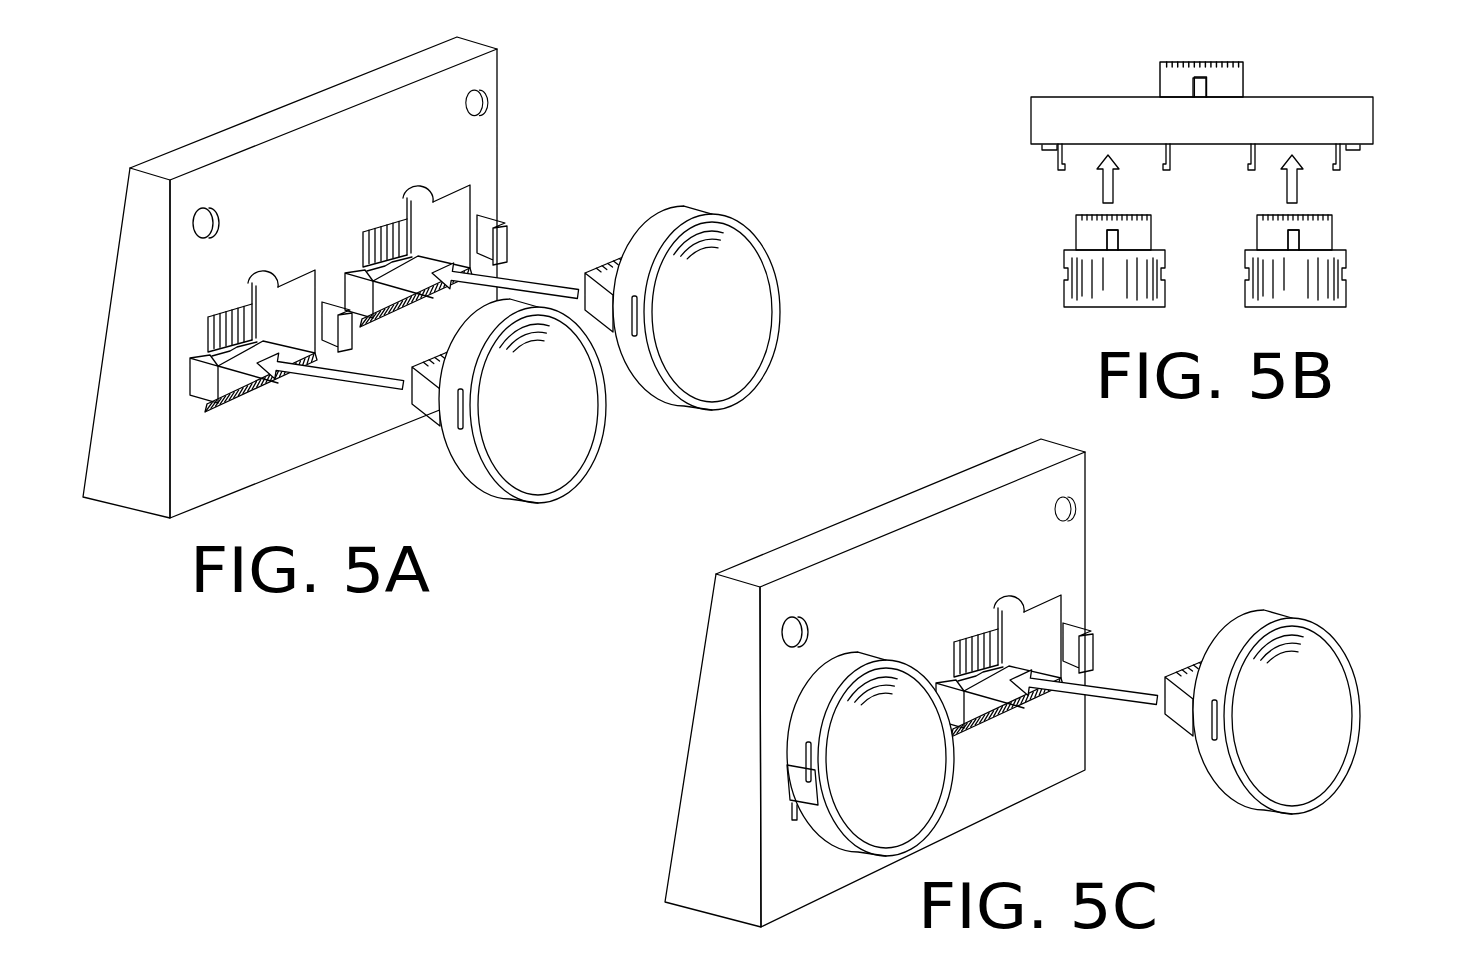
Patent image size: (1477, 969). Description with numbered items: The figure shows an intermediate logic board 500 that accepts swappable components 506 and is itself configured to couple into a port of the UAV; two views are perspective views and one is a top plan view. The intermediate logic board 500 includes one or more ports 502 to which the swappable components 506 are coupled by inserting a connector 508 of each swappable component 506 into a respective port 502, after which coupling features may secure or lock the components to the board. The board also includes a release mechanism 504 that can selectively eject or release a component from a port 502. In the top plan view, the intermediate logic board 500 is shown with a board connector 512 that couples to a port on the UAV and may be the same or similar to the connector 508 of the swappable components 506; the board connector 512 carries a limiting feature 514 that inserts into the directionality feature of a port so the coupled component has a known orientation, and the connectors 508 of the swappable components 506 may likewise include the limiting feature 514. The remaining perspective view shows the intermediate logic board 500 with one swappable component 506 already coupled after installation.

In FIG. 5A, the intermediate logic board 500 is at (186, 93).
In FIG. 5B, the intermediate logic board 500 is at (1023, 92).
In FIG. 5C, the intermediate logic board 500 is at (676, 638).
In FIG. 5A, the port 502 is at (218, 286).
In FIG. 5C, the port 502 is at (1067, 577).
In FIG. 5A, the release mechanism 504 is at (208, 212).
In FIG. 5C, the release mechanism 504 is at (797, 620).
In FIG. 5A, the swappable component 506 is at (752, 222).
In FIG. 5B, the swappable component 506 is at (1036, 285).
In FIG. 5C, the swappable component 506 is at (1335, 630).
In FIG. 5A, the connector 508 is at (605, 262).
In FIG. 5B, the connector 508 is at (1076, 232).
In FIG. 5C, the connector 508 is at (1178, 715).
In FIG. 5B, the board connector 512 is at (1245, 80).
In FIG. 5B, the limiting feature 514 is at (1192, 88).